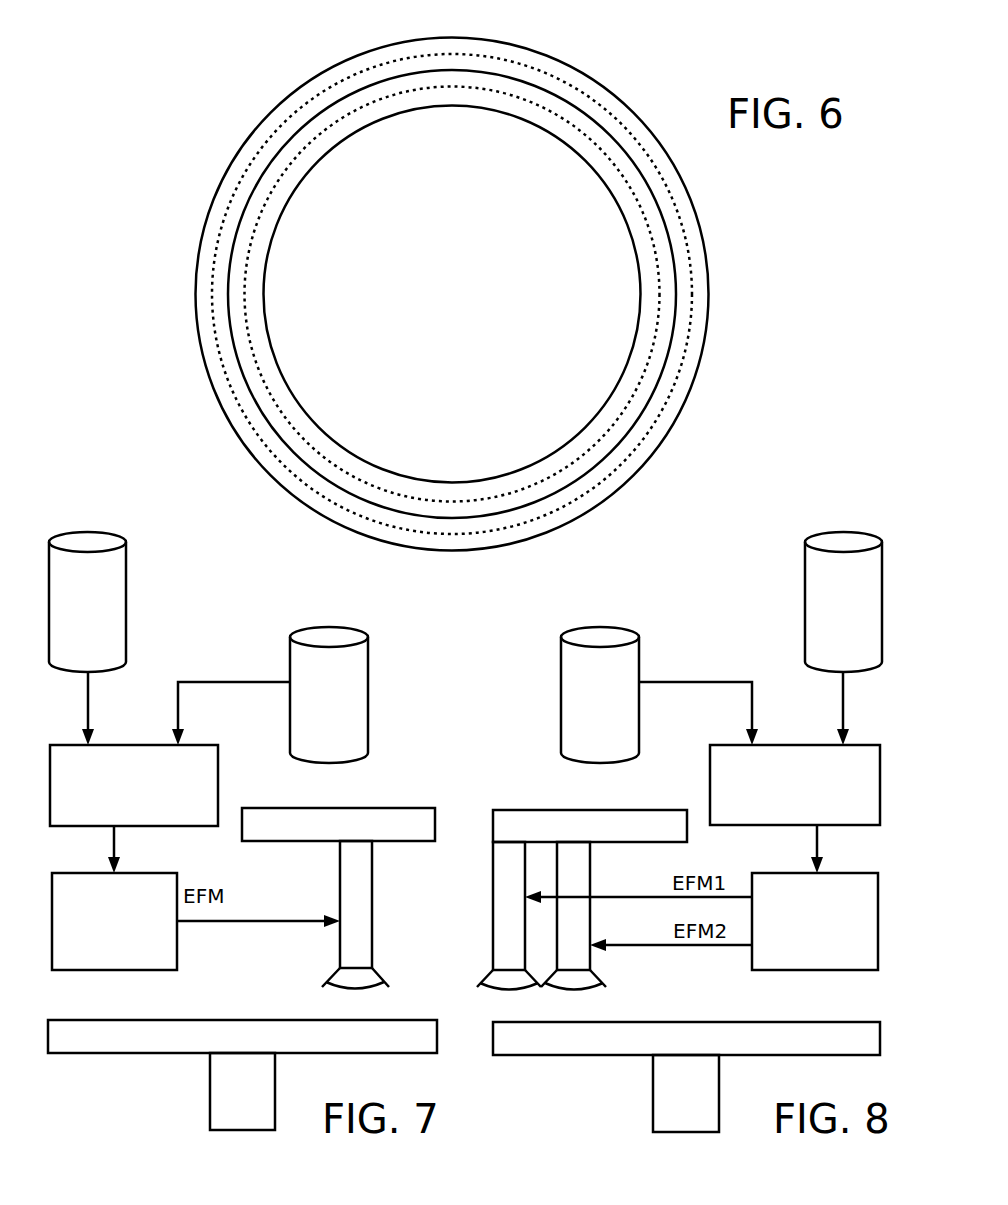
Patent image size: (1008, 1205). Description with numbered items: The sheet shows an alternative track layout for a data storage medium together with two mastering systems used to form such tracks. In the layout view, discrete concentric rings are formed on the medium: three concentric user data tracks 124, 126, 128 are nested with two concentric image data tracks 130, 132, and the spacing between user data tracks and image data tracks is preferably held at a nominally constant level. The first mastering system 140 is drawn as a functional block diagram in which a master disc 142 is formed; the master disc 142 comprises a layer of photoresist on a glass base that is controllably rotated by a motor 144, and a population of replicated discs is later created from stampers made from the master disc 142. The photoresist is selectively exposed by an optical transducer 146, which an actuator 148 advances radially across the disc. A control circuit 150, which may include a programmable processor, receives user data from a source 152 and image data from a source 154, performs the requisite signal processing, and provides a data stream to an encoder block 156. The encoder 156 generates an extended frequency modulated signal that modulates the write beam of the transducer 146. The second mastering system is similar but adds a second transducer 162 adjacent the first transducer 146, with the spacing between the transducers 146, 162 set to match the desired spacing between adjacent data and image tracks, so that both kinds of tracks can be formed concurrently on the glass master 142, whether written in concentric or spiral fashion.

In FIG. 6, the user data track 124 is at (278, 103).
In FIG. 6, the user data track 126 is at (262, 174).
In FIG. 6, the user data track 128 is at (266, 349).
In FIG. 6, the image data track 130 is at (212, 242).
In FIG. 6, the image data track 132 is at (297, 424).
In FIG. 7, the mastering system 140 is at (179, 622).
In FIG. 7, the master disc 142 is at (193, 1018).
In FIG. 8, the master disc 142 is at (742, 1018).
In FIG. 7, the motor 144 is at (207, 1073).
In FIG. 8, the motor 144 is at (653, 1095).
In FIG. 7, the optical transducer 146 is at (375, 880).
In FIG. 8, the optical transducer 146 is at (493, 940).
In FIG. 7, the actuator 148 is at (338, 806).
In FIG. 8, the actuator 148 is at (590, 808).
In FIG. 7, the control circuit 150 is at (133, 744).
In FIG. 8, the control circuit 150 is at (796, 744).
In FIG. 7, the source 152 is at (90, 532).
In FIG. 8, the source 152 is at (843, 532).
In FIG. 7, the source 154 is at (329, 625).
In FIG. 8, the source 154 is at (600, 625).
In FIG. 7, the encoder block 156 is at (114, 972).
In FIG. 8, the encoder block 156 is at (843, 972).
In FIG. 8, the second transducer 162 is at (592, 958).